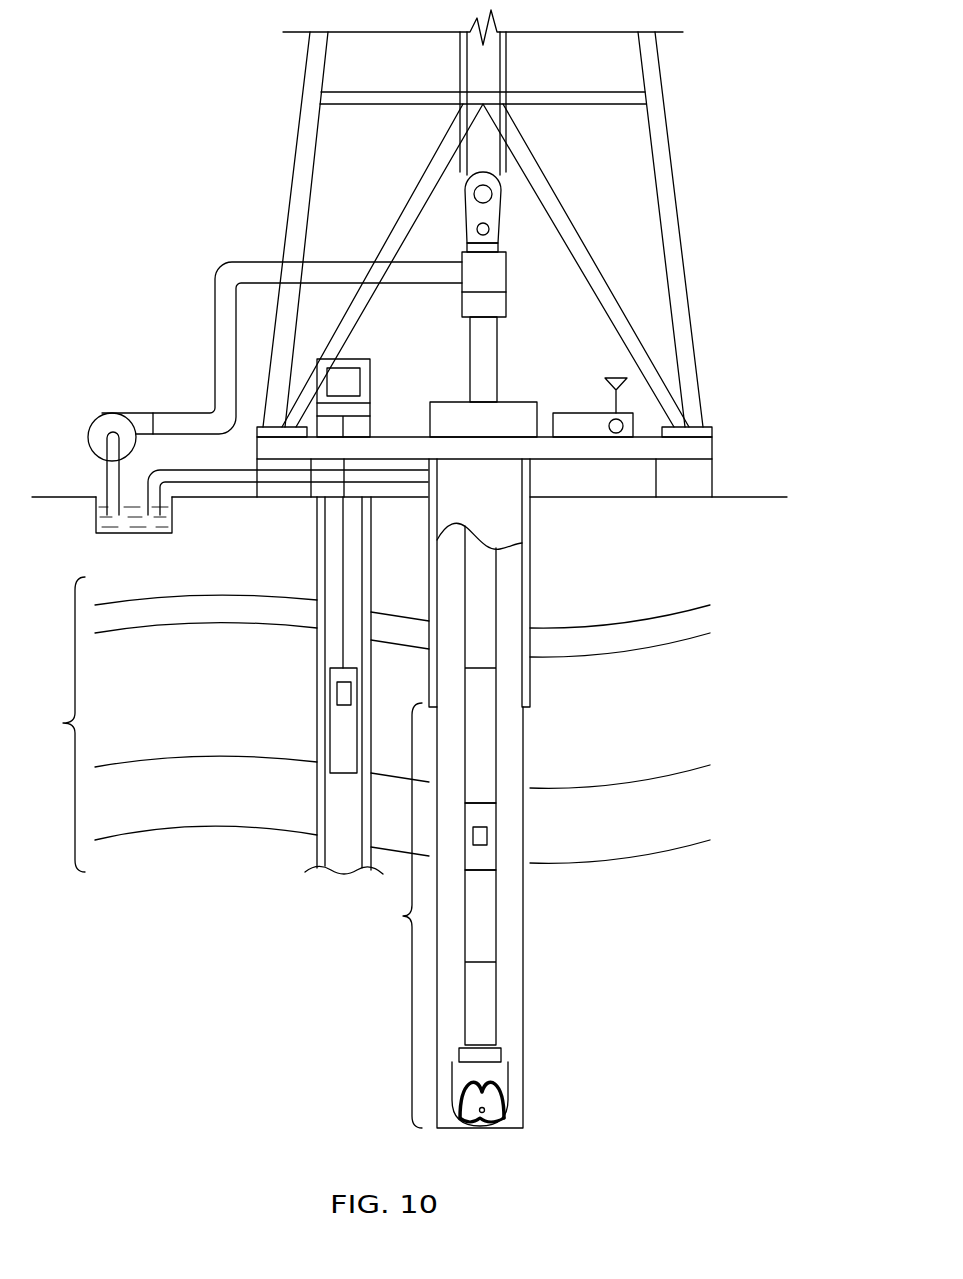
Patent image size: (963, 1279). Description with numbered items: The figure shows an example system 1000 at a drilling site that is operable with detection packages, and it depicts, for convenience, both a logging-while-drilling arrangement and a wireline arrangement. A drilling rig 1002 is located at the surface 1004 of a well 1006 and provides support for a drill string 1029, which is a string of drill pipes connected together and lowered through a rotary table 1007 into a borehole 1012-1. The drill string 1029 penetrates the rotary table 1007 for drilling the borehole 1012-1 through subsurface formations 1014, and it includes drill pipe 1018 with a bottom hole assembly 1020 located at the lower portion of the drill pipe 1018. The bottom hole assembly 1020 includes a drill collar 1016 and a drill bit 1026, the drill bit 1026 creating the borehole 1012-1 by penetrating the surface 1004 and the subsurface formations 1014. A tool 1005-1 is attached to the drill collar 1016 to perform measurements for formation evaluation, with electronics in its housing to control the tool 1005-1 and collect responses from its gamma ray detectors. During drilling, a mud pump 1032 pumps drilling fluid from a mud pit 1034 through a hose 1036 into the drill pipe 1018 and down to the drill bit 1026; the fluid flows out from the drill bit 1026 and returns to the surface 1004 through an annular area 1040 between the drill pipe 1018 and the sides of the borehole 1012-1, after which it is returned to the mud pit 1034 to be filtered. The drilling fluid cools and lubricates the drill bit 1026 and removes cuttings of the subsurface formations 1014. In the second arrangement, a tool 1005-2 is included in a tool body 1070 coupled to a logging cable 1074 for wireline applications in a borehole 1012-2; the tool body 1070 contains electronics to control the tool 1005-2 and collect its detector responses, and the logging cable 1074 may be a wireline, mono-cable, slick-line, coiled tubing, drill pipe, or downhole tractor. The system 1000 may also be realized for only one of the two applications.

The system 1000 is at (178, 38).
The drilling rig 1002 is at (674, 127).
The surface 1004 is at (743, 496).
The well 1006 is at (553, 492).
The rotary table 1007 is at (452, 401).
The borehole 1012-1 is at (522, 622).
The borehole 1012-2 is at (317, 583).
The subsurface formations 1014 is at (63, 723).
The drill collar 1016 is at (485, 816).
The drill pipe 1018 is at (497, 731).
The bottom hole assembly 1020 is at (403, 916).
The drill bit 1026 is at (503, 1073).
The drill string 1029 is at (504, 568).
The mud pump 1032 is at (110, 411).
The mud pit 1034 is at (96, 496).
The hose 1036 is at (228, 272).
The annular area 1040 is at (510, 766).
The tool 1005-1 is at (488, 834).
The tool 1005-2 is at (337, 689).
The tool body 1070 is at (330, 725).
The logging cable 1074 is at (343, 546).